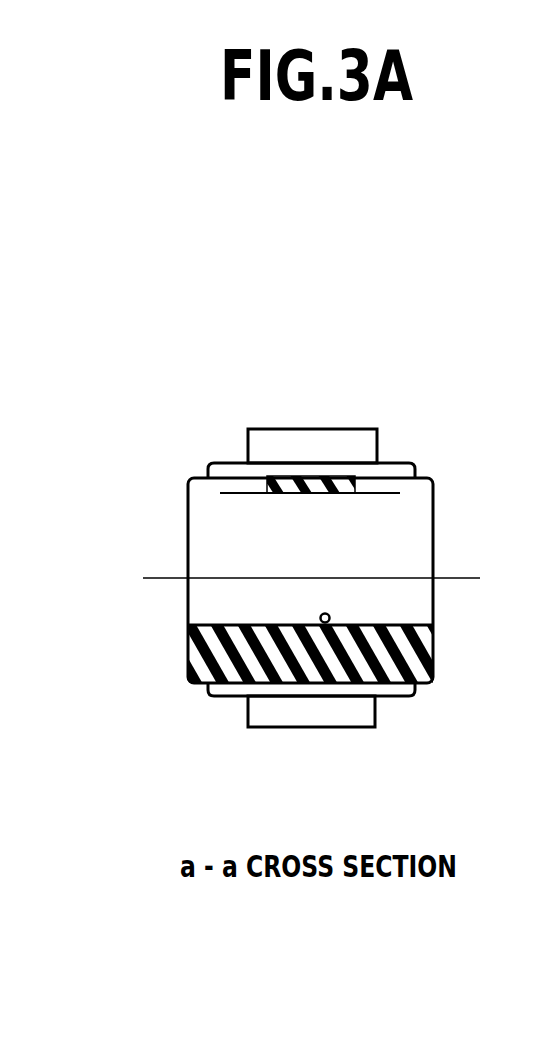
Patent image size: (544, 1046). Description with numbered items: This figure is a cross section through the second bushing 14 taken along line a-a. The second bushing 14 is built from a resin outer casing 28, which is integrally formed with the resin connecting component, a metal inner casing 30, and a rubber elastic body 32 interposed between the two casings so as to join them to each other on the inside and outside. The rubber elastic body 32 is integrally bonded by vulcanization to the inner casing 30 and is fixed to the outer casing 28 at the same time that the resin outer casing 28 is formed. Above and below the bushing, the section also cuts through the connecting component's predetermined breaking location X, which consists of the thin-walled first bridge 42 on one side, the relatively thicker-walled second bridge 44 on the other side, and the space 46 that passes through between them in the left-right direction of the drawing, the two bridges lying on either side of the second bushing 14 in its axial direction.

The second bushing 14 is at (186, 598).
The resin outer casing 28 is at (217, 543).
The metal inner casing 30 is at (347, 438).
The rubber elastic body 32 is at (383, 688).
The first bridge 42 is at (305, 482).
The second bridge 44 is at (272, 683).
The space 46 is at (322, 622).
The predetermined breaking location X is at (288, 445).